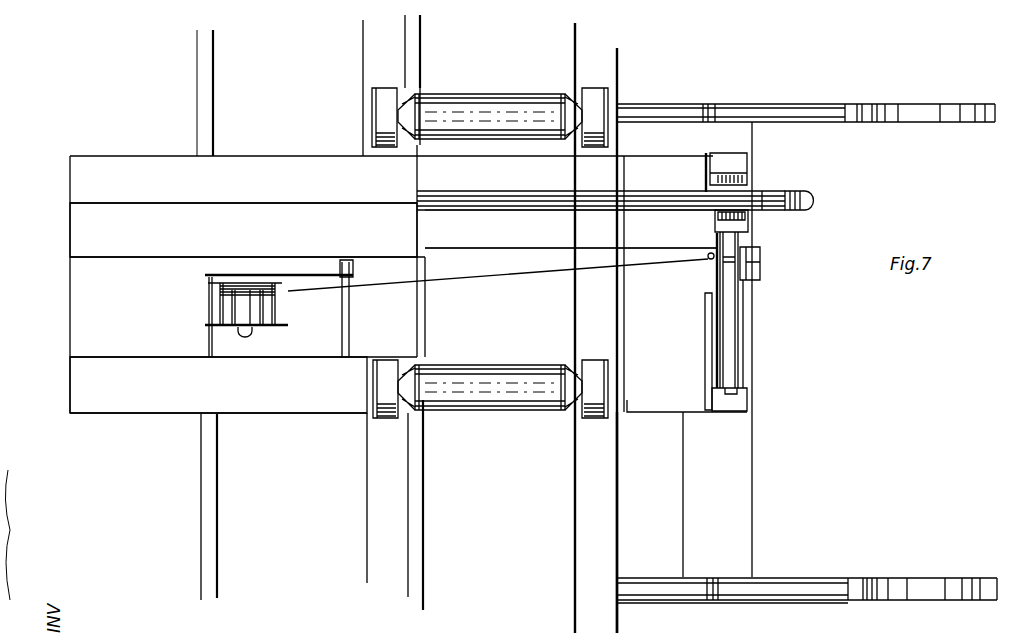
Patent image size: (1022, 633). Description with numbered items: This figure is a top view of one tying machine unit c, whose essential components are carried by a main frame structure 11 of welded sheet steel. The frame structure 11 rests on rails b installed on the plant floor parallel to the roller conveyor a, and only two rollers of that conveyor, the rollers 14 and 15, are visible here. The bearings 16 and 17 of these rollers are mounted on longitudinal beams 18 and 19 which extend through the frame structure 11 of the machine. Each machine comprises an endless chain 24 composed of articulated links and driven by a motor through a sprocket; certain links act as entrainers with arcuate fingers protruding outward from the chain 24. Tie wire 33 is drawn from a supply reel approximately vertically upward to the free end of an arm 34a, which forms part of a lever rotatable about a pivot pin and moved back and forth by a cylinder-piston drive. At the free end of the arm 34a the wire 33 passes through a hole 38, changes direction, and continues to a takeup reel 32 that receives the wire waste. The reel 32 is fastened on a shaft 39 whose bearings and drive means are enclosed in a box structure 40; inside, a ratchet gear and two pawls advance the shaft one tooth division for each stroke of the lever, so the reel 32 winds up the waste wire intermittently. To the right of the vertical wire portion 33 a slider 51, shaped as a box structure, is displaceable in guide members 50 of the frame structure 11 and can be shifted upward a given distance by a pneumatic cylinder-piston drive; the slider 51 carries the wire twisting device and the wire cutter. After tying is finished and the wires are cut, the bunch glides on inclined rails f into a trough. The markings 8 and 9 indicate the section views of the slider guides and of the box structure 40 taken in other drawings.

The main frame structure 11 is at (80, 337).
The roller 14 is at (527, 93).
The roller 15 is at (493, 366).
The bearing 16 is at (372, 104).
The bearing 17 is at (380, 383).
The longitudinal beam 18 is at (378, 457).
The longitudinal beam 19 is at (608, 553).
The endless chain 24 is at (502, 196).
The takeup reel 32 is at (270, 327).
The wire 33 is at (657, 263).
The arm 34a is at (446, 240).
The hole 38 is at (708, 262).
The shaft 39 is at (250, 330).
The box structure 40 is at (255, 210).
The guide member 50 is at (748, 231).
The slider 51 is at (734, 333).
The roller conveyor a is at (478, 92).
The rails b is at (210, 520).
The machine unit c is at (133, 421).
The inclined rails f is at (804, 112).
The section line 8 is at (732, 162).
The section line 9 is at (400, 270).